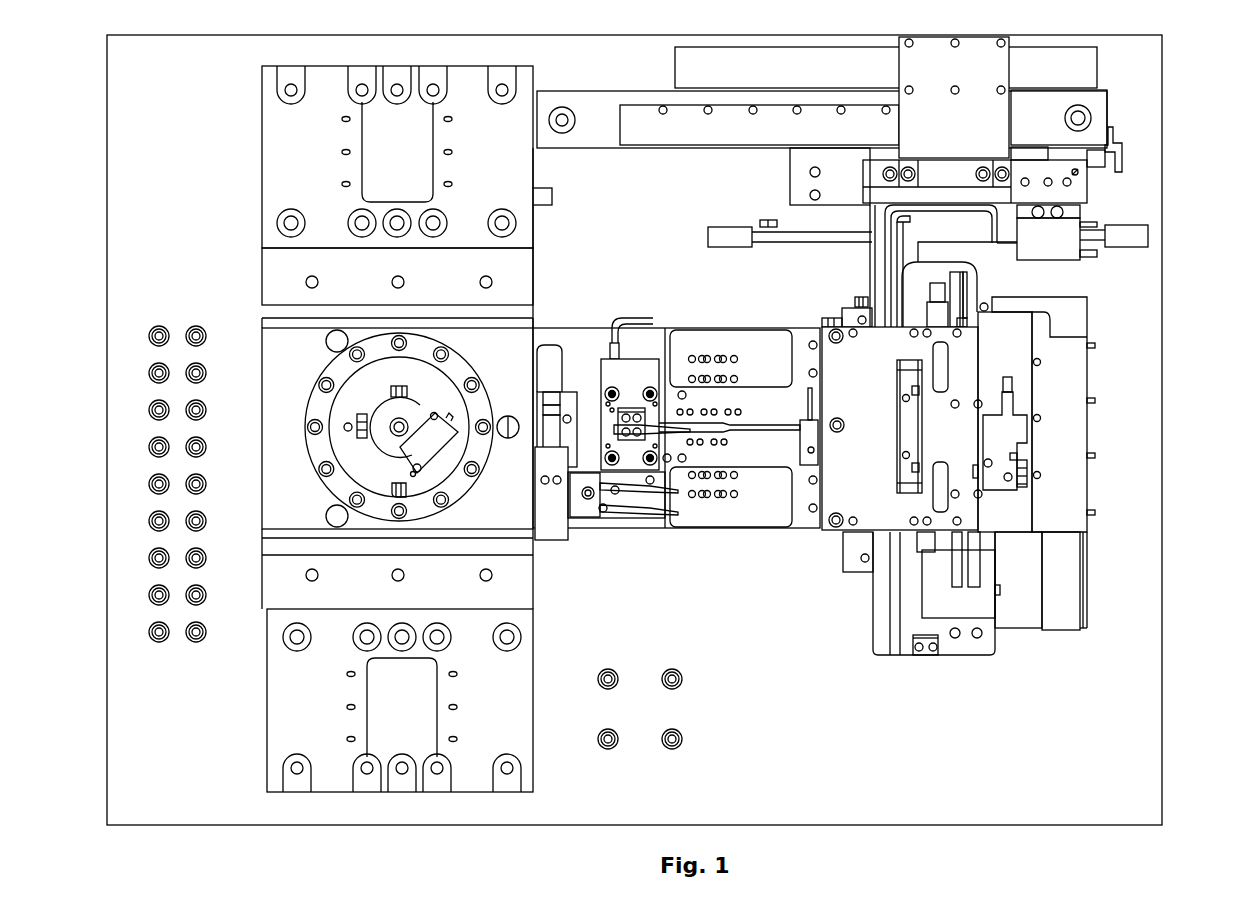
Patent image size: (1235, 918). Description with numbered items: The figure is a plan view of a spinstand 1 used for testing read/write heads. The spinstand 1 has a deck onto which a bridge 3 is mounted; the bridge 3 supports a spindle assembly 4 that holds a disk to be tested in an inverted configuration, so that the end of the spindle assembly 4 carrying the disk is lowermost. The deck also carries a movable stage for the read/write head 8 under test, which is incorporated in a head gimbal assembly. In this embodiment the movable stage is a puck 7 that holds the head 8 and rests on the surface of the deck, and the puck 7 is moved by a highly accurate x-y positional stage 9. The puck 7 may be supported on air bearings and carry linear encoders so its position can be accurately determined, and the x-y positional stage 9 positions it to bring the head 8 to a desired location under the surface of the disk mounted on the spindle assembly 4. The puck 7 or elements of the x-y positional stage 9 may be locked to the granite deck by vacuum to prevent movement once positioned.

The spinstand 1 is at (136, 80).
The bridge 3 is at (258, 148).
The spindle assembly 4 is at (284, 373).
The puck 7 is at (762, 543).
The read/write head 8 is at (643, 423).
The x-y positional stage 9 is at (1123, 157).